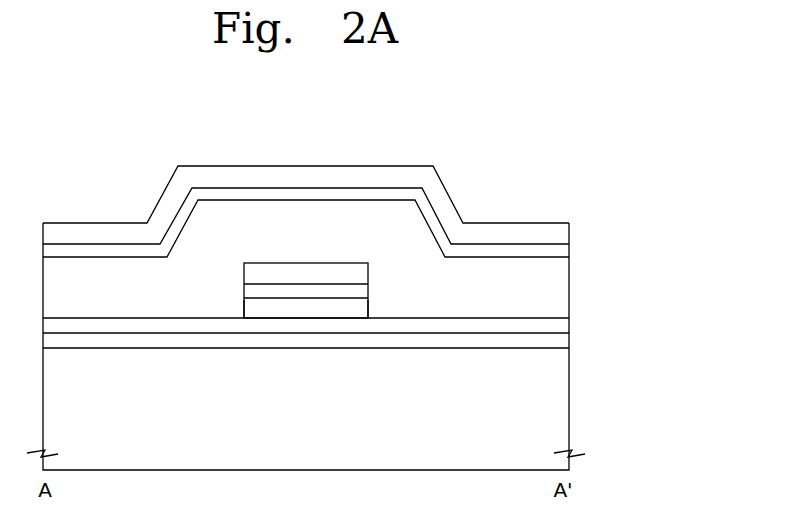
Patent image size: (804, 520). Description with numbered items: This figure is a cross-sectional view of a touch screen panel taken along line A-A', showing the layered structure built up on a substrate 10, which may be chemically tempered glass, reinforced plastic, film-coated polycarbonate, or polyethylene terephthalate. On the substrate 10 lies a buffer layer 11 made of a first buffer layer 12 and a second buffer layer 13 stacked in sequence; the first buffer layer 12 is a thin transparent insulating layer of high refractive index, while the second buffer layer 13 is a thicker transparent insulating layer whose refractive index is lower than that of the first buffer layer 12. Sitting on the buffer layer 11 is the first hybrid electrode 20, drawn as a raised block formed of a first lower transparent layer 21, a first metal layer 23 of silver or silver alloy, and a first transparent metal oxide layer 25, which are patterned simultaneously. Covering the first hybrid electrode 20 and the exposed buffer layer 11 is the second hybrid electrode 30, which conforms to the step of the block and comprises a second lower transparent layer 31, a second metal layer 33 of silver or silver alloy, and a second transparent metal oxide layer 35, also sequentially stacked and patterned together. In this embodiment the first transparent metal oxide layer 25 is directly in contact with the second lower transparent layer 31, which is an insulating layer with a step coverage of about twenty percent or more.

The substrate 10 is at (557, 403).
The buffer layer 11 is at (362, 343).
The first buffer layer 12 is at (557, 343).
The second buffer layer 13 is at (557, 325).
The first hybrid electrode 20 is at (306, 362).
The first lower transparent layer 21 is at (262, 308).
The first metal layer 23 is at (300, 290).
The first transparent metal oxide layer 25 is at (343, 272).
The second hybrid electrode 30 is at (362, 233).
The second lower transparent layer 31 is at (637, 218).
The second metal layer 33 is at (557, 250).
The second transparent metal oxide layer 35 is at (557, 228).